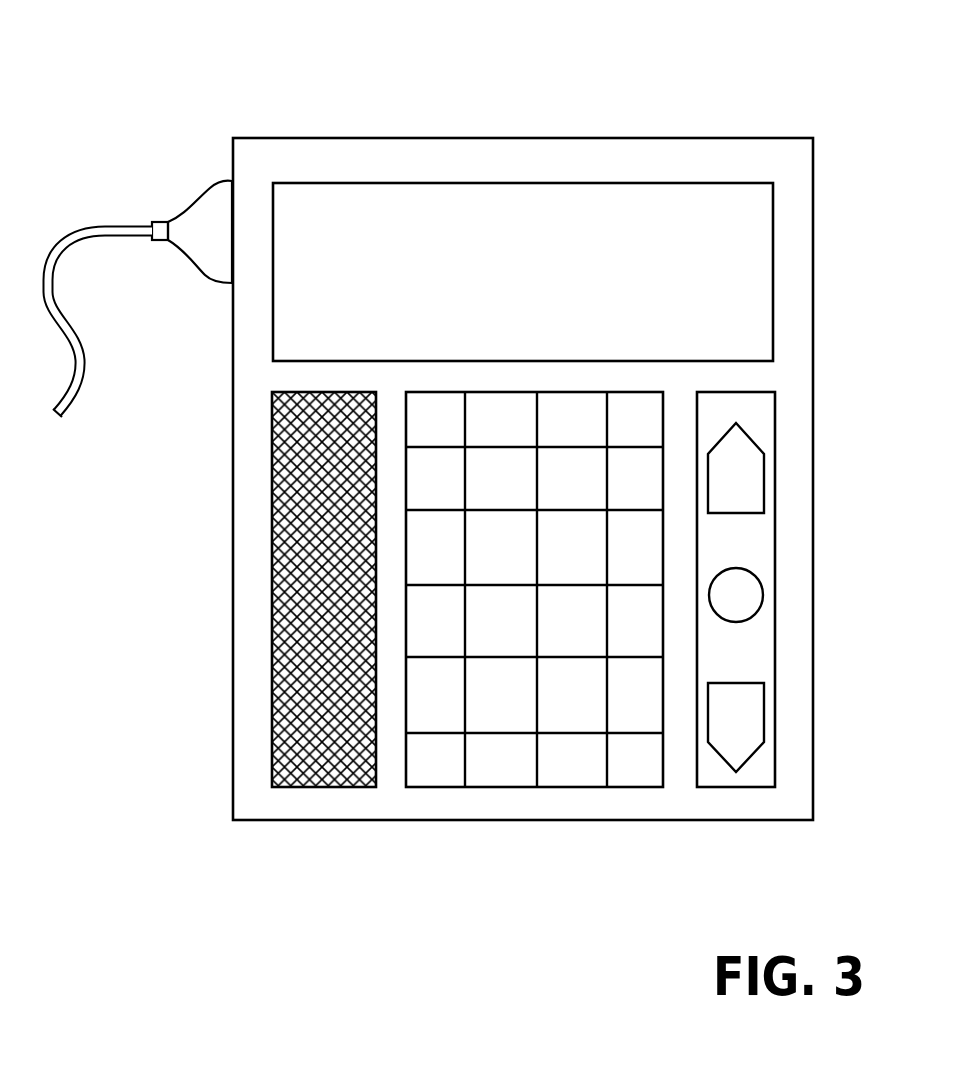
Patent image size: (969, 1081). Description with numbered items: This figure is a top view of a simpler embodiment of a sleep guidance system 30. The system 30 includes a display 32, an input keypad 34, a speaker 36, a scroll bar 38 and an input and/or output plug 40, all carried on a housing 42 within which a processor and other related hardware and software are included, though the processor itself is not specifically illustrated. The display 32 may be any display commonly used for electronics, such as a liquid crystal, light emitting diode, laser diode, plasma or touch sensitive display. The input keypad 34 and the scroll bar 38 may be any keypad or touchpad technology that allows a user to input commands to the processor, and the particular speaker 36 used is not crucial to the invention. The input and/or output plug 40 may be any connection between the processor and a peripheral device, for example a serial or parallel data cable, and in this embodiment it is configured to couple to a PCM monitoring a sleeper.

The sleep guidance system 30 is at (717, 81).
The display 32 is at (755, 247).
The input keypad 34 is at (433, 788).
The speaker 36 is at (272, 633).
The scroll bar 38 is at (759, 543).
The input and/or output plug 40 is at (203, 207).
The housing 42 is at (805, 369).